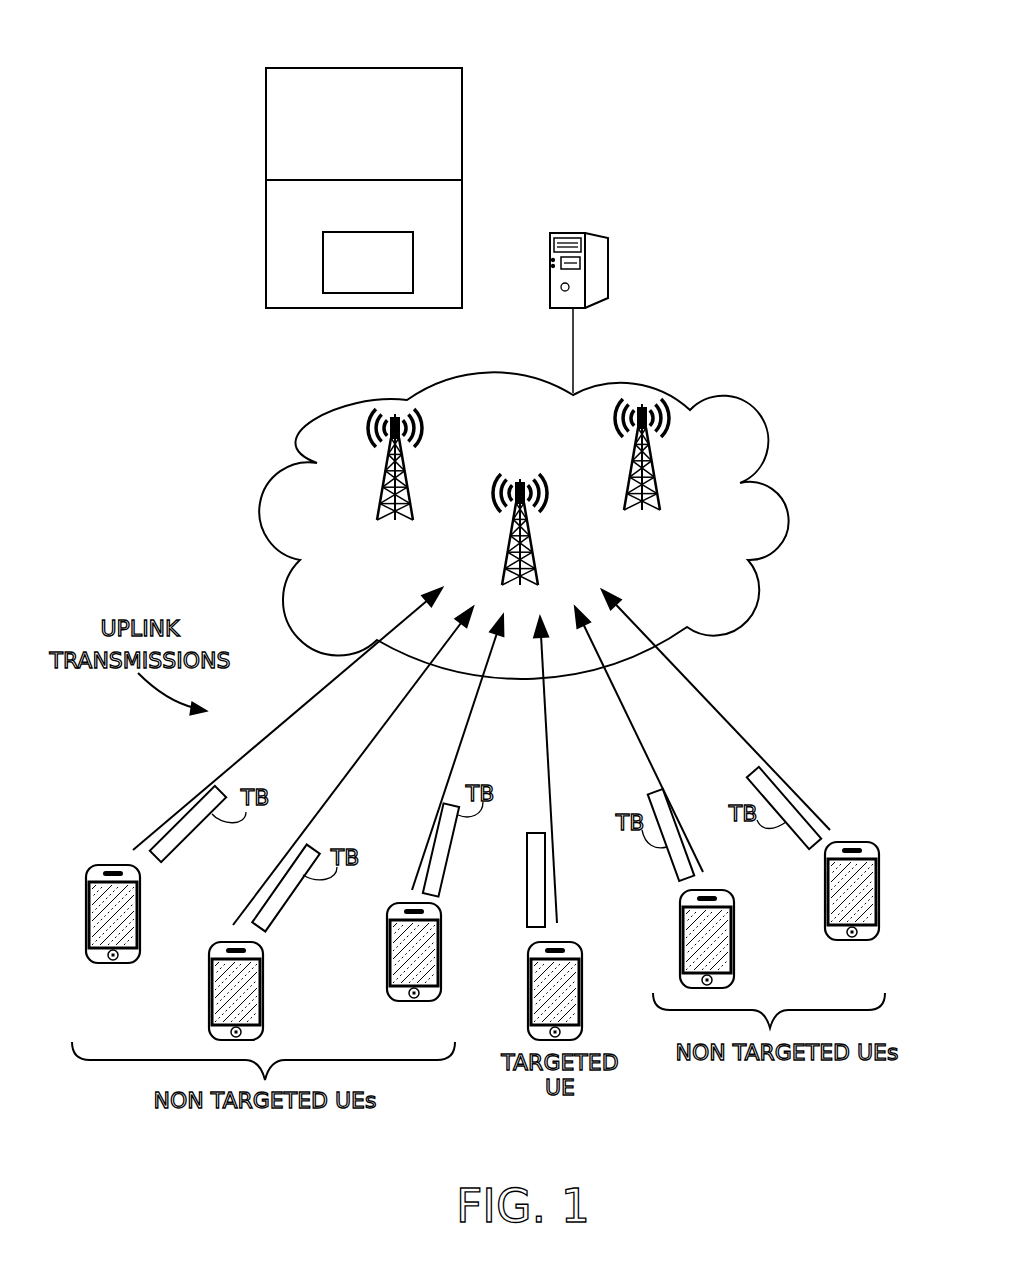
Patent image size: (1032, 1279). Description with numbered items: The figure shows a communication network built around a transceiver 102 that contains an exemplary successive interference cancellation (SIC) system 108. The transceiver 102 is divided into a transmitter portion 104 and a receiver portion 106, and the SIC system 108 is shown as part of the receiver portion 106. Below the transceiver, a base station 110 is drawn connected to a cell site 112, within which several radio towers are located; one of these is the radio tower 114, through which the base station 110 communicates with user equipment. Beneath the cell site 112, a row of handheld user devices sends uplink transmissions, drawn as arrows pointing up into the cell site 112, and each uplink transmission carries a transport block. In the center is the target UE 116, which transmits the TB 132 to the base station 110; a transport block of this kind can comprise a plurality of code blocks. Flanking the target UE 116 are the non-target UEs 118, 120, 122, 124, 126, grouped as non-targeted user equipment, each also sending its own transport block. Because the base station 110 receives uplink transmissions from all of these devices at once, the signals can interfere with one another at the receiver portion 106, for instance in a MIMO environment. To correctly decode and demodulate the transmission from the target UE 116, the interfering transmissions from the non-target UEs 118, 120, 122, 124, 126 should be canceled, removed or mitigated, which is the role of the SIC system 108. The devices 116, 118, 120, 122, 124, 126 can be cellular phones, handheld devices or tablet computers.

The transceiver 102 is at (370, 195).
The transmitter portion 104 is at (266, 117).
The receiver portion 106 is at (266, 203).
The successive interference cancellation (SIC) system 108 is at (323, 275).
The base station 110 is at (570, 232).
The cell site 112 is at (527, 517).
The radio tower 114 is at (503, 567).
The target UE 116 is at (528, 1003).
The non-target UE 118 is at (86, 910).
The non-target UE 120 is at (209, 990).
The non-target UE 122 is at (387, 965).
The non-target UE 124 is at (680, 945).
The non-target UE 126 is at (825, 898).
The transport block (TB) 132 is at (527, 905).